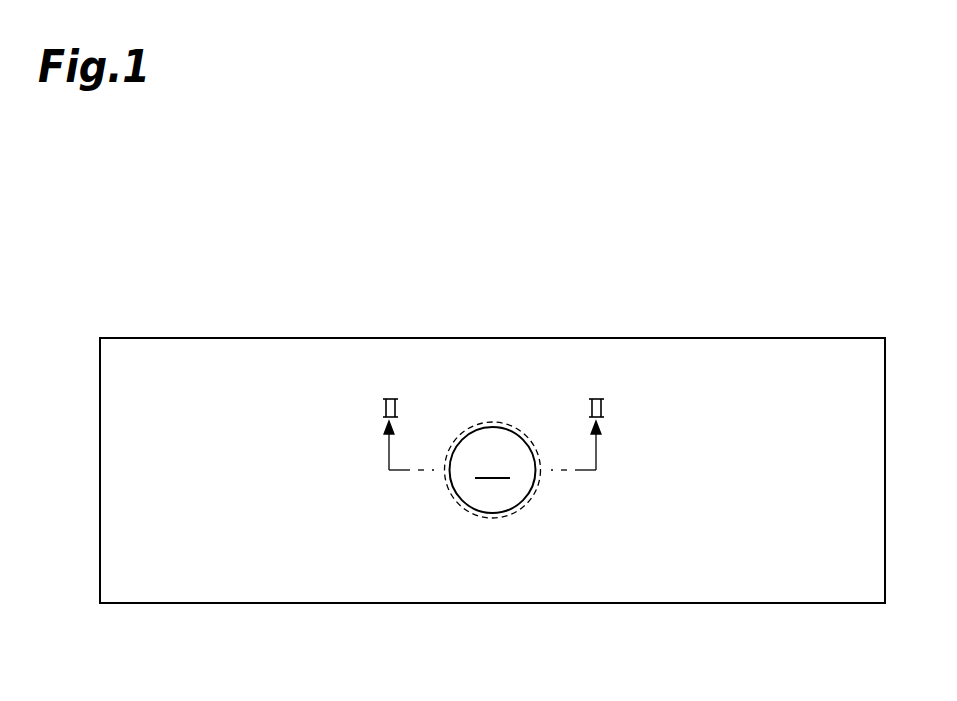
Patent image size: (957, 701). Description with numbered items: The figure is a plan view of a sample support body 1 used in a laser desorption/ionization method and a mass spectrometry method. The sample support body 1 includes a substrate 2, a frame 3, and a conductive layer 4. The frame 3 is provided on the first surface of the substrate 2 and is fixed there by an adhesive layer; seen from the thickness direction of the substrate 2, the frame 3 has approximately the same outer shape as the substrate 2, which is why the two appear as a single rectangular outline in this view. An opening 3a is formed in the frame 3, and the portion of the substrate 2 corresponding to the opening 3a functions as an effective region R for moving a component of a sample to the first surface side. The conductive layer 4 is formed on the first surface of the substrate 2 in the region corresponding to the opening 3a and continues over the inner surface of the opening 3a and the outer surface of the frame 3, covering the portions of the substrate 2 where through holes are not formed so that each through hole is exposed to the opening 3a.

The sample support body 1 is at (739, 255).
The substrate 2 is at (716, 605).
The frame 3 is at (492, 470).
The opening 3a is at (458, 483).
The conductive layer 4 is at (264, 351).